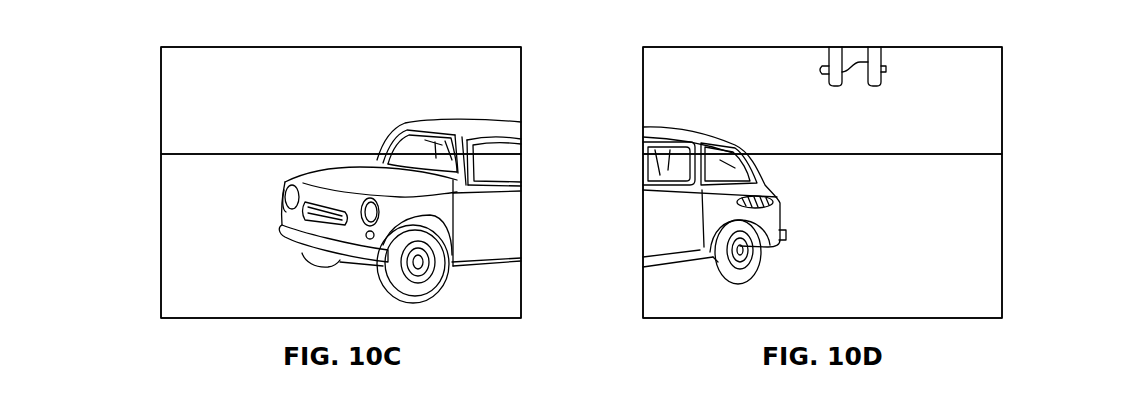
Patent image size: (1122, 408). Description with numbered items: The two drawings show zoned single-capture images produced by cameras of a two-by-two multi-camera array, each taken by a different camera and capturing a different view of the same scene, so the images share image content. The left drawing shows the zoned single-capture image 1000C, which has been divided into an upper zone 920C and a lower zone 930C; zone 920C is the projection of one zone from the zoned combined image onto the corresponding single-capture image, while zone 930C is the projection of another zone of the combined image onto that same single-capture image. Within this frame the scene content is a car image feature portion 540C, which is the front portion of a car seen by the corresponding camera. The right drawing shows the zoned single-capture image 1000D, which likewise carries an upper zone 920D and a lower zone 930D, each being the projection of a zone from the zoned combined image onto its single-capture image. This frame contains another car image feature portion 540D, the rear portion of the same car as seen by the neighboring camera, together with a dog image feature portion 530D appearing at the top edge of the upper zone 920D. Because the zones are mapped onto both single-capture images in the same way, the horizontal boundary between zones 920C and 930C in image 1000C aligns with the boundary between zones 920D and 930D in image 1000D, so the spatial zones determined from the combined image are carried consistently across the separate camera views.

In FIG. 10C, the zoned single-capture image 1000C is at (341, 173).
In FIG. 10C, the zone 920C is at (161, 97).
In FIG. 10C, the zone 930C is at (161, 226).
In FIG. 10C, the car image feature portion 540C is at (285, 214).
In FIG. 10D, the zoned single-capture image 1000D is at (822, 173).
In FIG. 10D, the zone 920D is at (1003, 98).
In FIG. 10D, the zone 930D is at (1003, 233).
In FIG. 10D, the dog image feature portion 530D is at (884, 71).
In FIG. 10D, the car image feature portion 540D is at (782, 206).